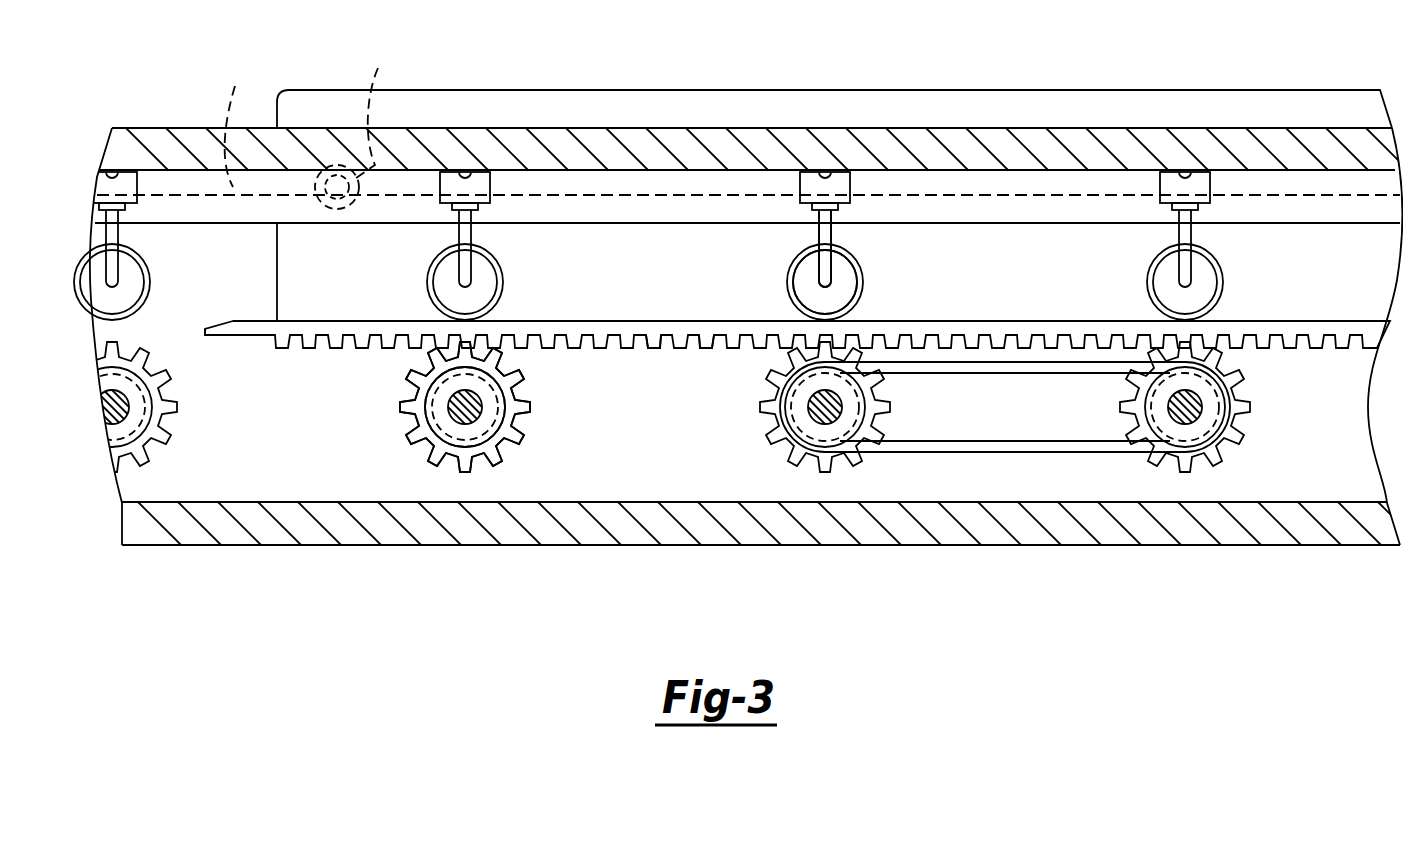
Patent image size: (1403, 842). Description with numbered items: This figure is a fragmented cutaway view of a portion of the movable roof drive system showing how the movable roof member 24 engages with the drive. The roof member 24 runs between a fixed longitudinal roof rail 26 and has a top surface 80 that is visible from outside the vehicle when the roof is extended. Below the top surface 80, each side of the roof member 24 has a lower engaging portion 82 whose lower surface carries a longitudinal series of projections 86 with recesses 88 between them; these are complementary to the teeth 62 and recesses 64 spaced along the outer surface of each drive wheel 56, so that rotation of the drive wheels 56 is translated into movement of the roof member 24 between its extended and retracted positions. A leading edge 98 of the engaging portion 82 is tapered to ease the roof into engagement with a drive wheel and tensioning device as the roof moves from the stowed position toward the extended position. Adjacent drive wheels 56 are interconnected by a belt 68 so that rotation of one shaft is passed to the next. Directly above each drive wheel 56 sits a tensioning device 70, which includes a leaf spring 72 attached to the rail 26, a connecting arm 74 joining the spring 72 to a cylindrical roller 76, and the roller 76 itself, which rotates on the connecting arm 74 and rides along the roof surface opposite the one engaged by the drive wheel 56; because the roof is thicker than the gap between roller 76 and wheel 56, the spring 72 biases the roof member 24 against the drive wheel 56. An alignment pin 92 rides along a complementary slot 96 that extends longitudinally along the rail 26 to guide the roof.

The movable roof member 24 is at (1005, 105).
The fixed longitudinal roof rail 26 is at (320, 545).
The top surface 80 is at (818, 85).
The slot 96 is at (228, 119).
The alignment pin 92 is at (359, 125).
The spring 72 is at (800, 185).
The connecting arm 74 is at (827, 238).
The tensioning device 70 is at (152, 290).
The cylindrical roller 76 is at (790, 302).
The lower engaging portion 82 is at (260, 321).
The leading edge 98 is at (217, 337).
The projections 86 is at (700, 350).
The recesses 88 is at (745, 350).
The drive wheel 56 is at (167, 443).
The teeth 62 is at (407, 445).
The recesses 64 is at (525, 423).
The belt 68 is at (1015, 445).